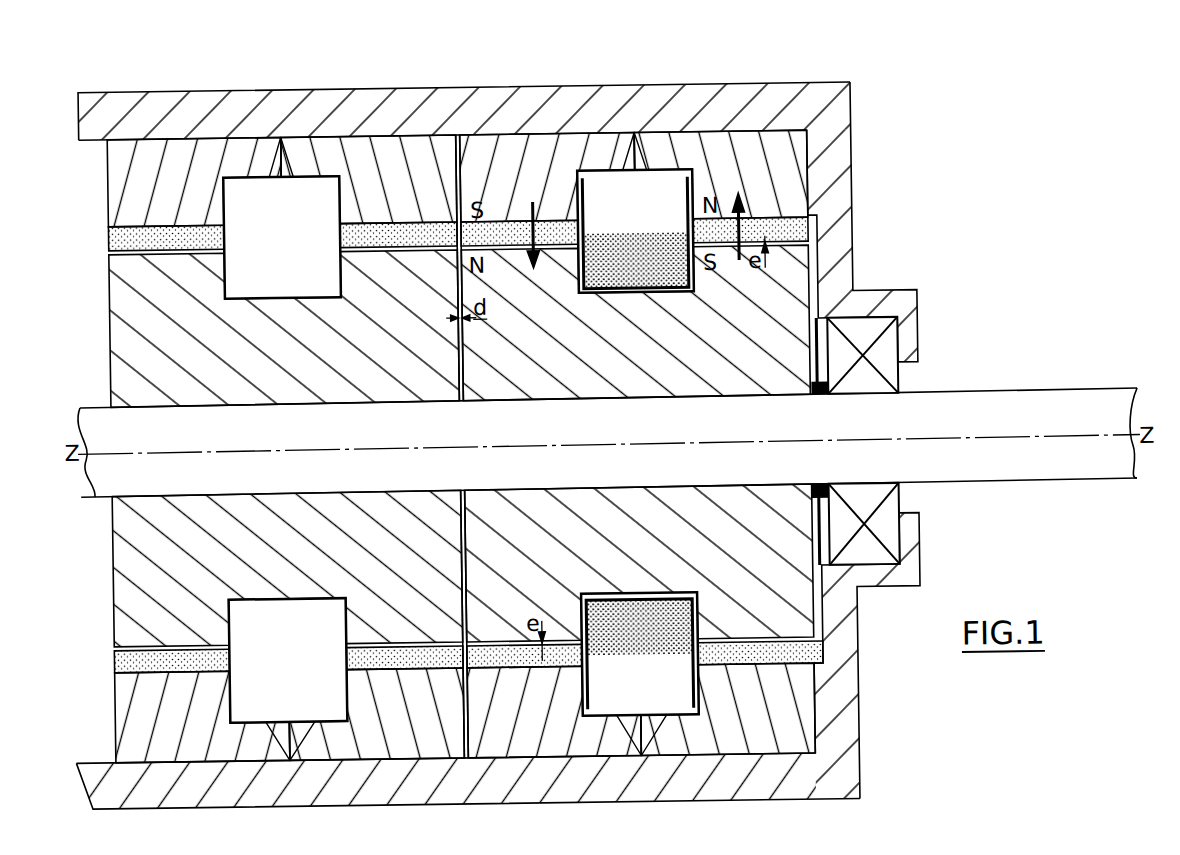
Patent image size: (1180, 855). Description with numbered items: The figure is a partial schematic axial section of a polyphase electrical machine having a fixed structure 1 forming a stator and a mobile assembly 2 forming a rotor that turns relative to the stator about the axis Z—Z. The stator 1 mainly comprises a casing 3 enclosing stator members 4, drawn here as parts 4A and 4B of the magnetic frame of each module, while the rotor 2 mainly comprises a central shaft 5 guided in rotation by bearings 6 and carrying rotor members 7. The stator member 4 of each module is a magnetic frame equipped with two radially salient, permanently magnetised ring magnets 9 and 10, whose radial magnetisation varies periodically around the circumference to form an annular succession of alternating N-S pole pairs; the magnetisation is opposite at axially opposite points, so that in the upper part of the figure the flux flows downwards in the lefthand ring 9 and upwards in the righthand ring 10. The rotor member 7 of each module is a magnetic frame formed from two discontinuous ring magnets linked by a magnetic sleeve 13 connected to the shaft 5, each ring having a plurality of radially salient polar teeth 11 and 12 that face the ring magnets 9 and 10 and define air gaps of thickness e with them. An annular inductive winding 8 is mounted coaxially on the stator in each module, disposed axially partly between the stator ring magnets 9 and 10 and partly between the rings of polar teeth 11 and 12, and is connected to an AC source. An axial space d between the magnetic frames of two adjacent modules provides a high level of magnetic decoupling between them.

The fixed structure 1 is at (866, 258).
The mobile assembly 2 is at (1138, 398).
The casing 3 is at (618, 87).
The stator members 4 is at (432, 124).
The first pole piece part 4A is at (127, 168).
The second pole piece part 4B is at (415, 170).
The central shaft 5 is at (453, 438).
The bearings 6 is at (899, 386).
The rotor members 7 is at (281, 370).
The windings 8 is at (461, 446).
The ring magnet 9 is at (519, 207).
The ring magnet 10 is at (768, 232).
The polar teeth 11 is at (560, 238).
The polar teeth 12 is at (790, 236).
The magnetic sleeve 13 is at (636, 292).